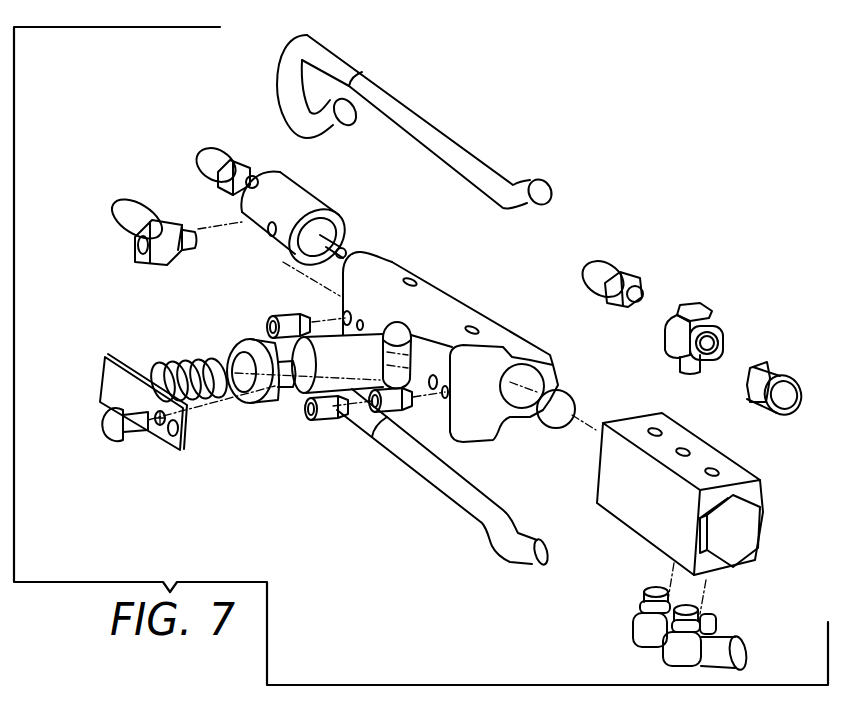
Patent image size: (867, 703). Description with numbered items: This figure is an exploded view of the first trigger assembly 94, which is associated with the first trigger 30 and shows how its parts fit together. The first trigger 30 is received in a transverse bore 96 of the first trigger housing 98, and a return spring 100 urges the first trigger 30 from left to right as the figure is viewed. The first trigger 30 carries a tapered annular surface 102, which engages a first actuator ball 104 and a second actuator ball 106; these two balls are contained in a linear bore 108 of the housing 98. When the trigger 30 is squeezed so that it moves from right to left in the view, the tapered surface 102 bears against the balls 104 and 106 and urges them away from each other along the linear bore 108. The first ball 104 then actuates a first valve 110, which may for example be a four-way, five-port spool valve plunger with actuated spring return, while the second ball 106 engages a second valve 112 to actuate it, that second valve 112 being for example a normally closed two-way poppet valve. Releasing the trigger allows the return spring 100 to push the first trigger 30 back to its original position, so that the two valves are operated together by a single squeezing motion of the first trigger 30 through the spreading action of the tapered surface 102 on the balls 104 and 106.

The first trigger assembly 94 is at (613, 133).
The transverse bore 96 is at (403, 330).
The first trigger housing 98 is at (488, 302).
The return spring 100 is at (190, 360).
The tapered annular surface 102 is at (312, 372).
The first actuator ball 104 is at (563, 400).
The second actuator ball 106 is at (373, 258).
The linear bore 108 is at (530, 377).
The first valve 110 is at (645, 518).
The second valve 112 is at (313, 190).
The first trigger 30 is at (264, 397).